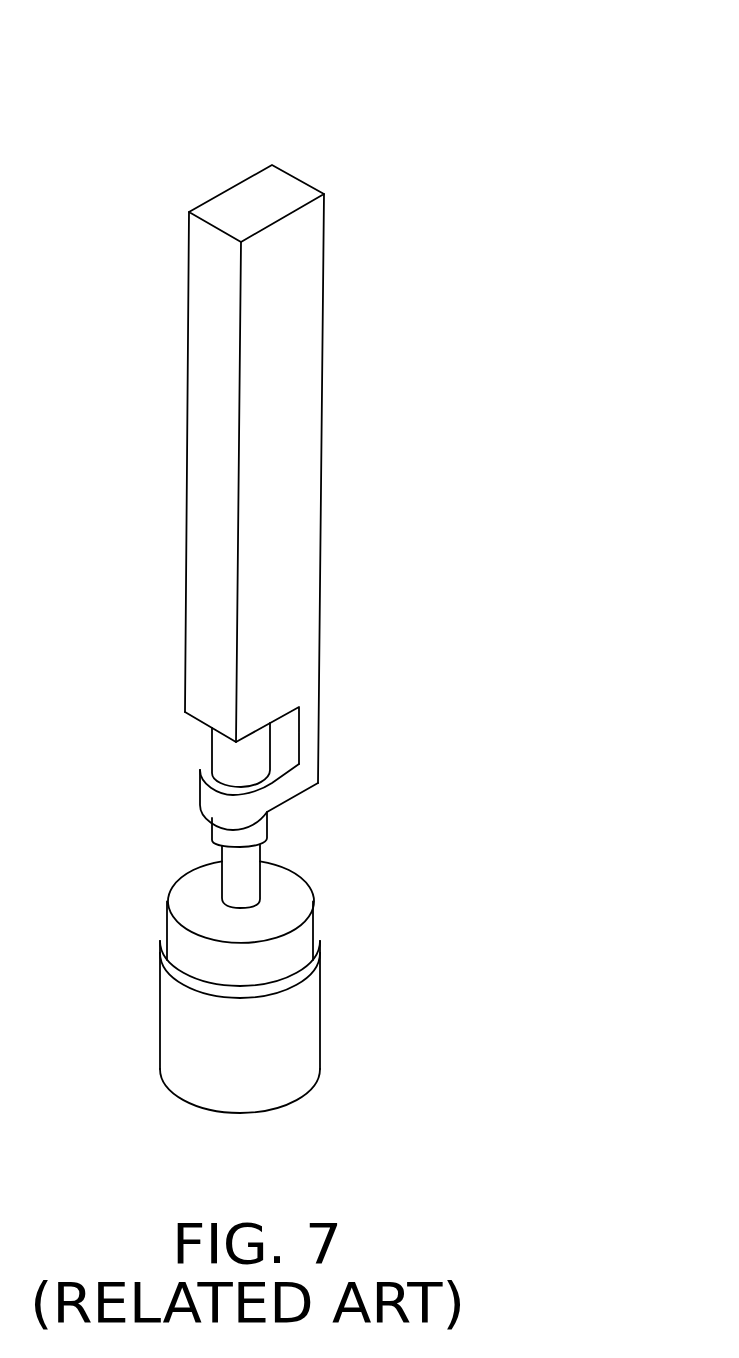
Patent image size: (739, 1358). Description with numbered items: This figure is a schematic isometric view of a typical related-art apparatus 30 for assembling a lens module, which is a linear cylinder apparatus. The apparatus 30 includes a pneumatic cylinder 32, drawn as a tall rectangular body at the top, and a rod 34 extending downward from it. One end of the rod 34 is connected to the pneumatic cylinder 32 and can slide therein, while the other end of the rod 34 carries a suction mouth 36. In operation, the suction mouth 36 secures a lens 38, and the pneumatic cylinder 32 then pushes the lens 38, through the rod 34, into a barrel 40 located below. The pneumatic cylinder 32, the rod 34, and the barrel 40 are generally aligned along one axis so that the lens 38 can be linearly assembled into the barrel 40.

The apparatus 30 is at (313, 37).
The pneumatic cylinder 32 is at (288, 462).
The rod 34 is at (247, 870).
The suction mouth 36 is at (252, 908).
The lens 38 is at (187, 950).
The barrel 40 is at (293, 1043).